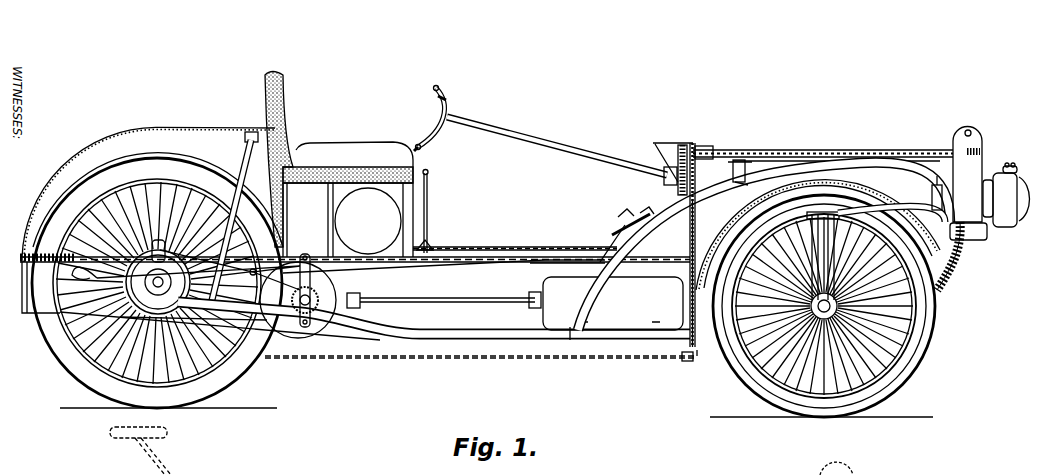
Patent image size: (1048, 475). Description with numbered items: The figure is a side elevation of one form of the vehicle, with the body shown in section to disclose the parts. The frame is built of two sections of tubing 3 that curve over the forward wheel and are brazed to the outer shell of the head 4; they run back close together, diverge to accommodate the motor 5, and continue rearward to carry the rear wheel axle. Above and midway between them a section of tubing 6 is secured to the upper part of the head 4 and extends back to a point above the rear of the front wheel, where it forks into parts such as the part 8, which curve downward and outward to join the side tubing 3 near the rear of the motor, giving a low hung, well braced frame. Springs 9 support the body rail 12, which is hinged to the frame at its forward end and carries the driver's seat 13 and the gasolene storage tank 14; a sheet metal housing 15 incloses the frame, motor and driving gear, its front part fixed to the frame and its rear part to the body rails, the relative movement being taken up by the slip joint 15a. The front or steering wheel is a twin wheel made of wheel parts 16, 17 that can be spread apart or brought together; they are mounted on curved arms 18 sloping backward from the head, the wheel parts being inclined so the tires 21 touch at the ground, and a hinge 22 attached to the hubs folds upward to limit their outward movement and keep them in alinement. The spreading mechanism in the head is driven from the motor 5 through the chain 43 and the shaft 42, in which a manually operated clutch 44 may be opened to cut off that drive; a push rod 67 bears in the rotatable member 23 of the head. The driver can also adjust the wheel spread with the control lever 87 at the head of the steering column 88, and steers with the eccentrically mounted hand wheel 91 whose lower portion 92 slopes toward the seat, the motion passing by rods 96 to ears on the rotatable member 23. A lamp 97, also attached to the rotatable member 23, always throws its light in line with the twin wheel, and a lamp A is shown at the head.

The sections of tubing 3 is at (505, 250).
The head 4 is at (444, 284).
The motor 5 is at (613, 303).
The section of tubing 6 is at (885, 167).
The fork part 8 is at (652, 226).
The springs 9 is at (72, 275).
The body rail 12 is at (288, 262).
The driver's seat 13 is at (327, 173).
The gasolene storage tank 14 is at (368, 221).
The sheet metal housing 15 is at (176, 128).
The slip joint 15a is at (686, 361).
The wheel part 16 is at (893, 337).
The wheel part 17 is at (512, 451).
The curved arm 18 is at (925, 285).
The tires 21 is at (883, 390).
The hinge 22 is at (830, 213).
The rotatable member 23 is at (957, 140).
The shaft 42 is at (732, 158).
The chain 43 is at (690, 258).
The clutch 44 is at (703, 150).
The push rod 67 is at (968, 130).
The control lever 87 is at (432, 97).
The steering column 88 is at (550, 142).
The hand wheel 91 is at (446, 102).
The lower portion of the wheel 92 is at (433, 148).
The rods 96 is at (903, 160).
The lamp 97 is at (1003, 229).
The lamp A is at (962, 183).